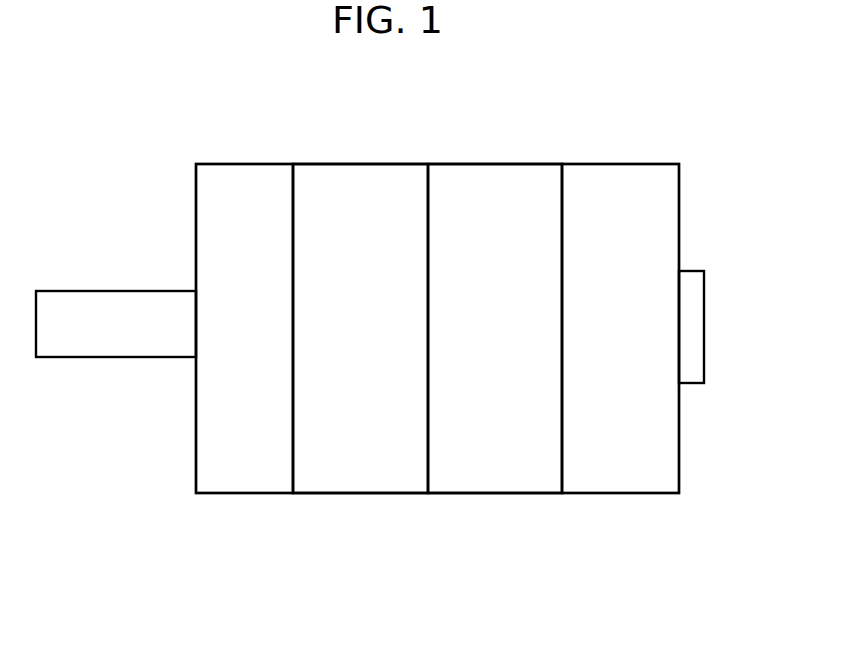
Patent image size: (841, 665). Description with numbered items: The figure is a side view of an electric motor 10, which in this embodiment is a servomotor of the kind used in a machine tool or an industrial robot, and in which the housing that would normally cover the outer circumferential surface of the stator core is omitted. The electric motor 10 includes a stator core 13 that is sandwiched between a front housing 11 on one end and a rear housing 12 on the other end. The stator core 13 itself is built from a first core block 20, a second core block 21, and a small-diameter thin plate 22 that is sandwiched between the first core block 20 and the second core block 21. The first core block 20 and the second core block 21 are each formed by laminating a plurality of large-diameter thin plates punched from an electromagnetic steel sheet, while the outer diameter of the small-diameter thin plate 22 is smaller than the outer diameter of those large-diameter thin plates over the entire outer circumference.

The electric motor 10 is at (647, 131).
The front housing 11 is at (248, 494).
The rear housing 12 is at (642, 494).
The stator core 13 is at (528, 580).
The first core block 20 is at (368, 494).
The second core block 21 is at (518, 494).
The small-diameter thin plate 22 is at (423, 494).